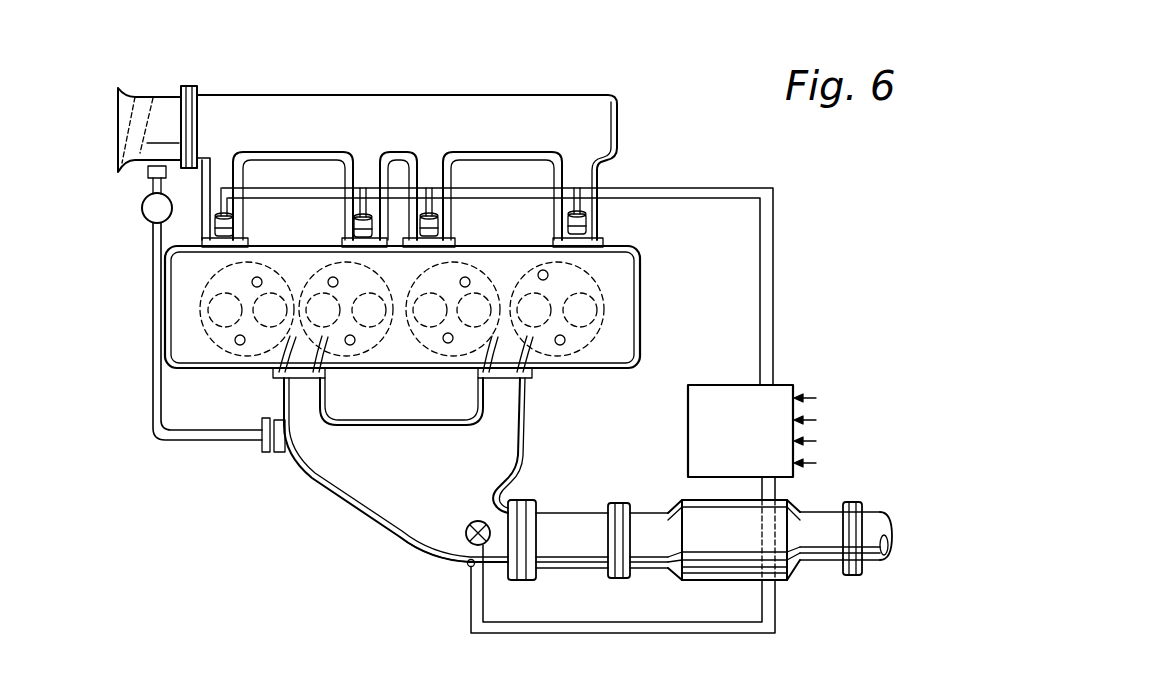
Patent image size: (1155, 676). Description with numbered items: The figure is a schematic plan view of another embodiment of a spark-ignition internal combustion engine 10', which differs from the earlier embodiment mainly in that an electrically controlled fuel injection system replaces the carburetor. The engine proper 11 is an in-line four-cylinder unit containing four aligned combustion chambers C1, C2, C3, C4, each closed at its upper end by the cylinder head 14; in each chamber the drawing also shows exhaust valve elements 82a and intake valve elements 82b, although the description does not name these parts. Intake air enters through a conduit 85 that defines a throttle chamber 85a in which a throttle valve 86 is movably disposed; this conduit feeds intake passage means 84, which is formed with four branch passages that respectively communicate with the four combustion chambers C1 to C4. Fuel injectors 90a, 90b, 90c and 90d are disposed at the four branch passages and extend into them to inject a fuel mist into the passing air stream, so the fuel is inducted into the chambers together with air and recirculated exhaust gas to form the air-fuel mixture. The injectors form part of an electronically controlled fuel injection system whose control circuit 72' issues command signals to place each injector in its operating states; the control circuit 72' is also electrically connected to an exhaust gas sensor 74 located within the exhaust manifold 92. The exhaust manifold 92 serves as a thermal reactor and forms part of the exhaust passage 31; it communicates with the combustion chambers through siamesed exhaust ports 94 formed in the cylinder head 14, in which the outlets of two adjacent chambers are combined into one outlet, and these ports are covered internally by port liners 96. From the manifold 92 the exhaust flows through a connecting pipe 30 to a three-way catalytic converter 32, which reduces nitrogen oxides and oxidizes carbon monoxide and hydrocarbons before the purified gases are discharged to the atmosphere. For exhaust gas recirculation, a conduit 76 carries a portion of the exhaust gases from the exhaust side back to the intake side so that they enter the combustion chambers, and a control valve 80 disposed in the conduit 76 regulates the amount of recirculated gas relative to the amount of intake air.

The spark-ignition internal combustion engine 10' is at (652, 121).
The engine proper 11 is at (636, 259).
The cylinder head 14 is at (630, 312).
The connecting pipe 30 is at (568, 518).
The exhaust passage 31 is at (393, 546).
The three-way catalytic converter 32 is at (693, 510).
The control circuit 72' is at (663, 410).
The exhaust gas sensor 74 is at (466, 536).
The conduit 76 is at (203, 442).
The control valve 80 is at (150, 214).
The exhaust valve 82a is at (238, 347).
The intake valve 82b is at (260, 278).
The intake passage means 84 is at (400, 96).
The conduit 85 is at (168, 98).
The throttle chamber 85a is at (164, 132).
The throttle valve 86 is at (135, 97).
The fuel injector 90a is at (215, 222).
The fuel injector 90b is at (354, 223).
The fuel injector 90c is at (438, 222).
The fuel injector 90d is at (588, 227).
The exhaust manifold 92 is at (373, 504).
The siamesed exhaust ports 94 is at (277, 352).
The port liners 96 is at (322, 353).
The combustion chamber C1 is at (210, 348).
The combustion chamber C2 is at (380, 345).
The combustion chamber C3 is at (427, 348).
The combustion chamber C4 is at (602, 343).